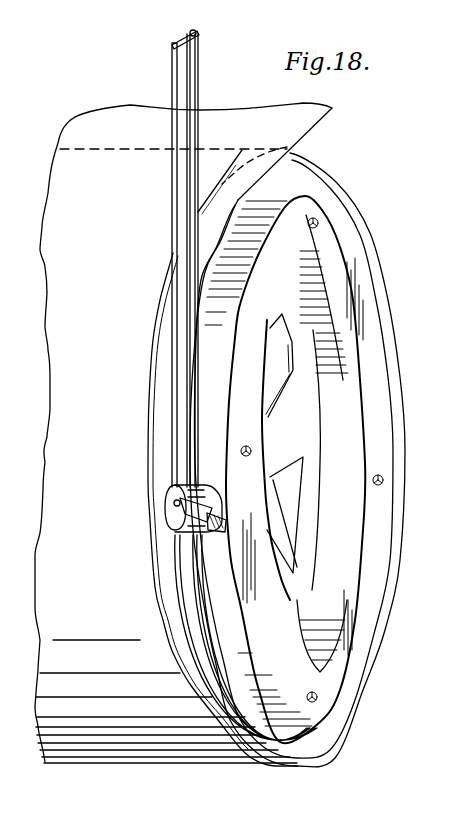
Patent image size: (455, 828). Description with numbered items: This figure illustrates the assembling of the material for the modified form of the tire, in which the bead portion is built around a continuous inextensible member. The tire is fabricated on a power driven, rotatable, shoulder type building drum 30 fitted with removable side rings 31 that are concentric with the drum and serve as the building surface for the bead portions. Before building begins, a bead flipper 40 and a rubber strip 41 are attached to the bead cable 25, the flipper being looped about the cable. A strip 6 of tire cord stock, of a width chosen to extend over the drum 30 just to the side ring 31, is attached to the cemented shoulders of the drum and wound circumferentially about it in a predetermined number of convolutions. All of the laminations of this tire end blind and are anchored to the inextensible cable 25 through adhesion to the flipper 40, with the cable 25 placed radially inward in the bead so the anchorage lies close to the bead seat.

The strip of tire cord stock 6 is at (300, 128).
The bead cable 25 is at (194, 34).
The building drum 30 is at (377, 248).
The side rings 31 is at (382, 352).
The bead flipper 40 is at (175, 58).
The rubber strip 41 is at (190, 32).